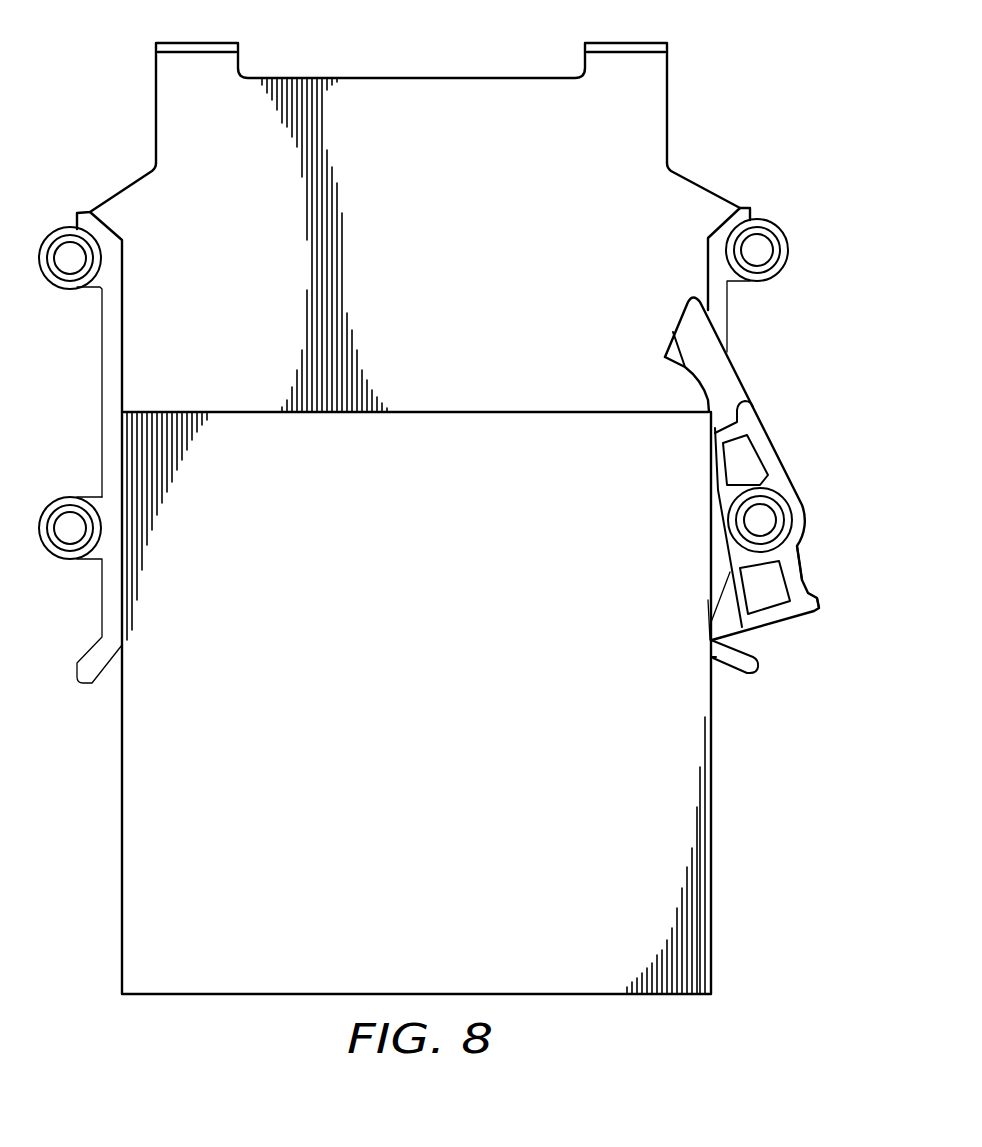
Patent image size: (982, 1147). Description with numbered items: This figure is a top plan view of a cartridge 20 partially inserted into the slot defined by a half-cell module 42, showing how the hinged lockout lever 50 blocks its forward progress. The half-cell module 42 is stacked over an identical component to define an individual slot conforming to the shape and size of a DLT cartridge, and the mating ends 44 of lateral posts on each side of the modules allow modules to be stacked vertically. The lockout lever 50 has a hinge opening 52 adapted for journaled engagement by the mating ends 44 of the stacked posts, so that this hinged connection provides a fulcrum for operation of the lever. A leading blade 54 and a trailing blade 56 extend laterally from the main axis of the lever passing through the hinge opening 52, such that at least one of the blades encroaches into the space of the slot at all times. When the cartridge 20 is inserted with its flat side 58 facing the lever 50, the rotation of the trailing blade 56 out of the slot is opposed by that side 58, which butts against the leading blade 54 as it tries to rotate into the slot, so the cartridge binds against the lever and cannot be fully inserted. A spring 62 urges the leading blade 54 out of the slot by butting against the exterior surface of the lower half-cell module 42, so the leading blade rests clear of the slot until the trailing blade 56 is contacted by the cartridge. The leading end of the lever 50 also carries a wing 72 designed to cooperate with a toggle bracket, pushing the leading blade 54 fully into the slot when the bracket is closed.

The cartridge 20 is at (434, 715).
The half-cell module 42 is at (432, 258).
The mating end 44 is at (758, 250).
The lockout lever 50 is at (770, 438).
The hinge opening 52 is at (796, 547).
The leading blade 54 is at (708, 628).
The trailing blade 56 is at (665, 358).
The flat side 58 is at (714, 845).
The spring 62 is at (737, 672).
The wing 72 is at (818, 598).